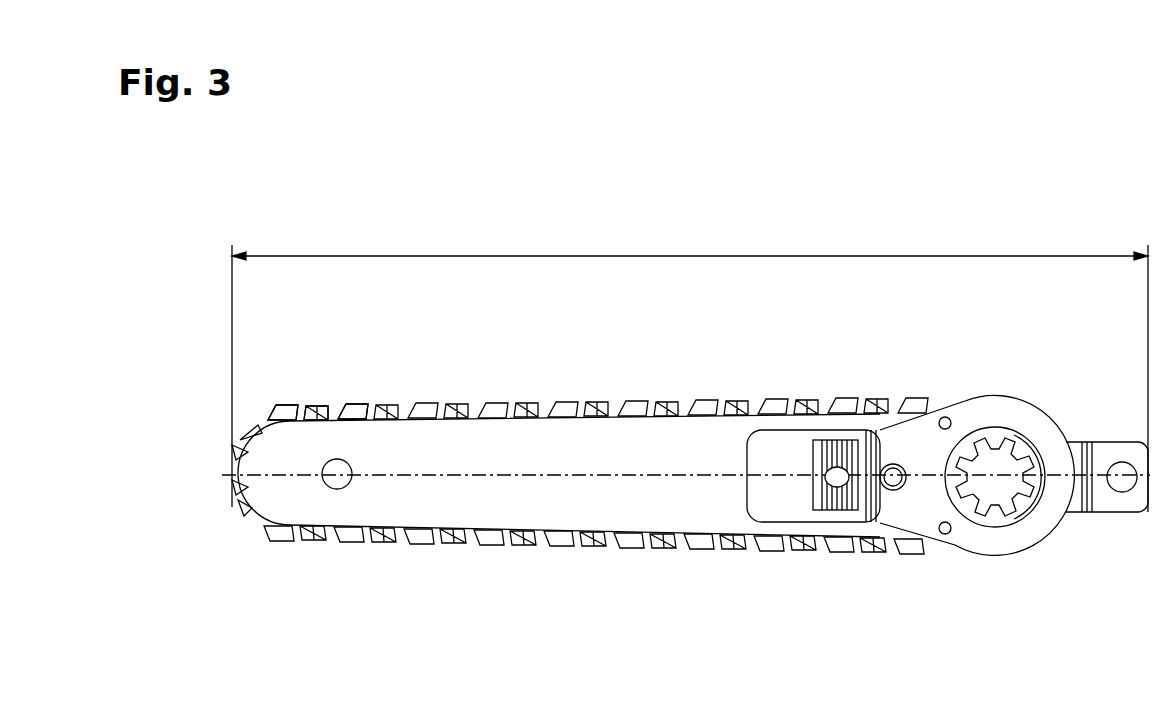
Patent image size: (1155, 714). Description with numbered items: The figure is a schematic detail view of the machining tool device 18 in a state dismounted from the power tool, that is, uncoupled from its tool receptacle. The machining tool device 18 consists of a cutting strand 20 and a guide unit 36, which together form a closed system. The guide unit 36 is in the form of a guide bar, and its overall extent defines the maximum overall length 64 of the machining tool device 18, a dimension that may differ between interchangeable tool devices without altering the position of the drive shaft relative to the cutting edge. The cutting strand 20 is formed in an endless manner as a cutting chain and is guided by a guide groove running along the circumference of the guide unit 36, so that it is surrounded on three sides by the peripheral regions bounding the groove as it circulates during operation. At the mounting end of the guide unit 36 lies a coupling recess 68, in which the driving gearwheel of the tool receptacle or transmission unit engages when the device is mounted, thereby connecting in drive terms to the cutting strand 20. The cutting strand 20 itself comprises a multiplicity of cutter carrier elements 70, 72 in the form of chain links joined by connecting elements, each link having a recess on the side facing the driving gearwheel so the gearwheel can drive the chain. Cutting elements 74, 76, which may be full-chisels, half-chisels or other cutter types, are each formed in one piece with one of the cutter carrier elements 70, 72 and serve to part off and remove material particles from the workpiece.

The machining tool device 18 is at (1029, 233).
The cutting strand 20 is at (470, 403).
The guide unit 36 is at (425, 452).
The maximum overall length 64 is at (708, 255).
The coupling recess 68 is at (983, 505).
The cutter carrier element 70 is at (266, 425).
The cutter carrier element 72 is at (340, 396).
The cutting element 74 is at (285, 404).
The cutting element 76 is at (305, 405).